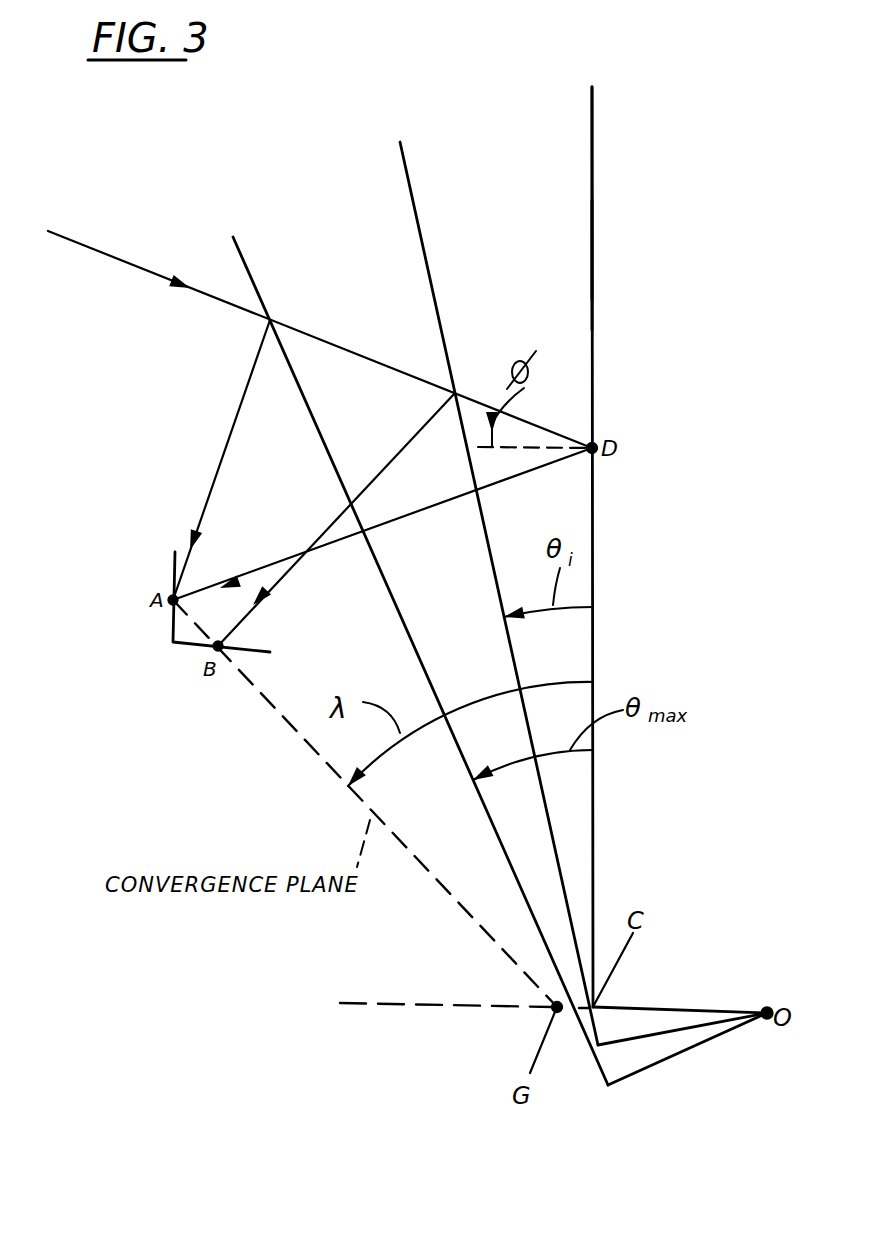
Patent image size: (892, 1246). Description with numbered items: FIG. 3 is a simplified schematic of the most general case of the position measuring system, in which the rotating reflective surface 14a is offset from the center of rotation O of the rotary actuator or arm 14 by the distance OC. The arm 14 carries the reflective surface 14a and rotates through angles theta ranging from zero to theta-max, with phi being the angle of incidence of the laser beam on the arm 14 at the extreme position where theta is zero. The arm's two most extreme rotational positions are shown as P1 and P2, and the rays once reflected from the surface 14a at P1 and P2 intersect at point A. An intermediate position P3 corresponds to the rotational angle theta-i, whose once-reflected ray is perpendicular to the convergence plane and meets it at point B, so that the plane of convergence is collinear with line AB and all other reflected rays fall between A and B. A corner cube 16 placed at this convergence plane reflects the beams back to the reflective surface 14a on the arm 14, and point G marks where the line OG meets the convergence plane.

The rotary actuator or arm 14 is at (592, 193).
The reflective surface 14a is at (590, 268).
The corner cube 16 is at (170, 633).
The extreme rotational position of the arm P1 is at (588, 104).
The extreme rotational position of the arm P2 is at (238, 257).
The third plane P3 is at (405, 170).